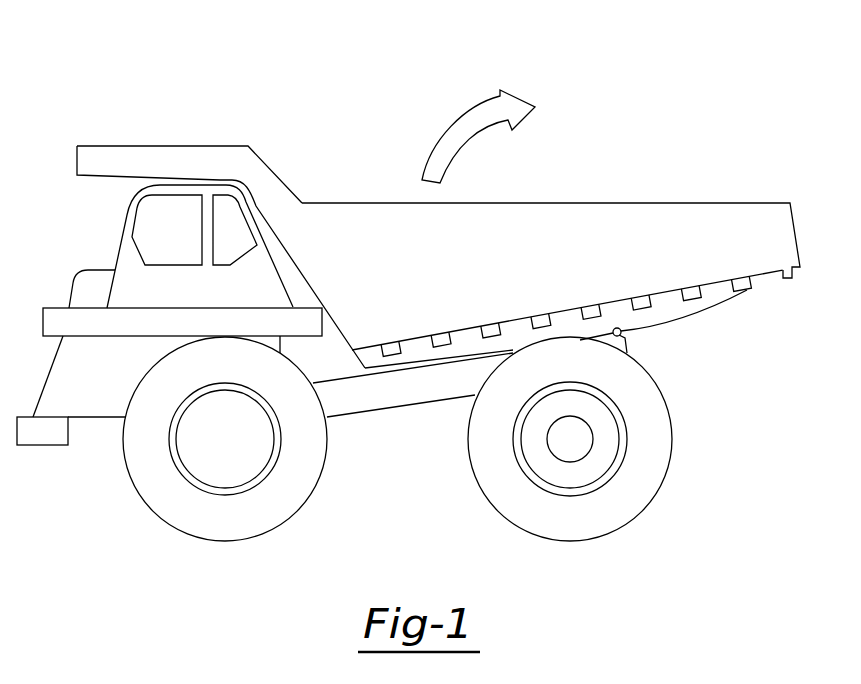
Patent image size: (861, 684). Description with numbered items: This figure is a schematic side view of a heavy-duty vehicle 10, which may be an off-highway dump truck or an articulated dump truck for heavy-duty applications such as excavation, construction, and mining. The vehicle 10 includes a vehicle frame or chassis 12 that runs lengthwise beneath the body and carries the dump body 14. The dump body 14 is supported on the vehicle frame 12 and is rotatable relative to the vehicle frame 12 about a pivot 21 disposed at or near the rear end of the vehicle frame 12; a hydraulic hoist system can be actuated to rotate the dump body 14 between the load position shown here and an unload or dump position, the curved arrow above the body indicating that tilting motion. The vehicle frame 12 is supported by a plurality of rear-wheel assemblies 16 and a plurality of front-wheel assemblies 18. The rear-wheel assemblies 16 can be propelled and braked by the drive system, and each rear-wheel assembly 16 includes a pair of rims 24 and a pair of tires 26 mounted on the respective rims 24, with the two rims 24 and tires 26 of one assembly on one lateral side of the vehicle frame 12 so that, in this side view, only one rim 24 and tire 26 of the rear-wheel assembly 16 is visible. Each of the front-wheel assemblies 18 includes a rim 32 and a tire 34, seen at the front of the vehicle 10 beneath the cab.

The heavy-duty vehicle 10 is at (408, 317).
The vehicle frame 12 is at (419, 406).
The dump body 14 is at (650, 203).
The rear-wheel assemblies 16 is at (609, 474).
The front-wheel assemblies 18 is at (213, 476).
The pivot 21 is at (622, 331).
The rims 24 is at (605, 443).
The tires 26 is at (662, 397).
The rim 32 is at (205, 457).
The tire 34 is at (292, 517).